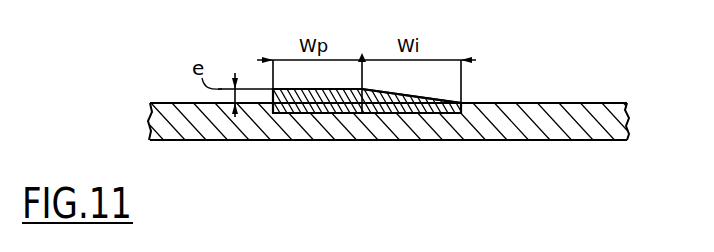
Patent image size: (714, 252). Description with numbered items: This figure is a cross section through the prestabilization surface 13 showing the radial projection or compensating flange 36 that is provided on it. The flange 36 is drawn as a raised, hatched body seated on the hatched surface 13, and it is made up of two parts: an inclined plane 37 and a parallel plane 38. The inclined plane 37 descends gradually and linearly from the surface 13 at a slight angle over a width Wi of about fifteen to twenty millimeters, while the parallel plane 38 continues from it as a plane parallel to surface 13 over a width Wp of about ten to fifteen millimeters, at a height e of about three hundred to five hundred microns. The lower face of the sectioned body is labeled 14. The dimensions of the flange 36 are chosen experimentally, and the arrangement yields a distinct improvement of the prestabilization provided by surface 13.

The prestabilization surface 13 is at (558, 102).
The lower surface of substrate 14 is at (550, 140).
The radial projection or compensating flange 36 is at (341, 86).
The inclined plane 37 is at (440, 97).
The parallel plane 38 is at (298, 108).